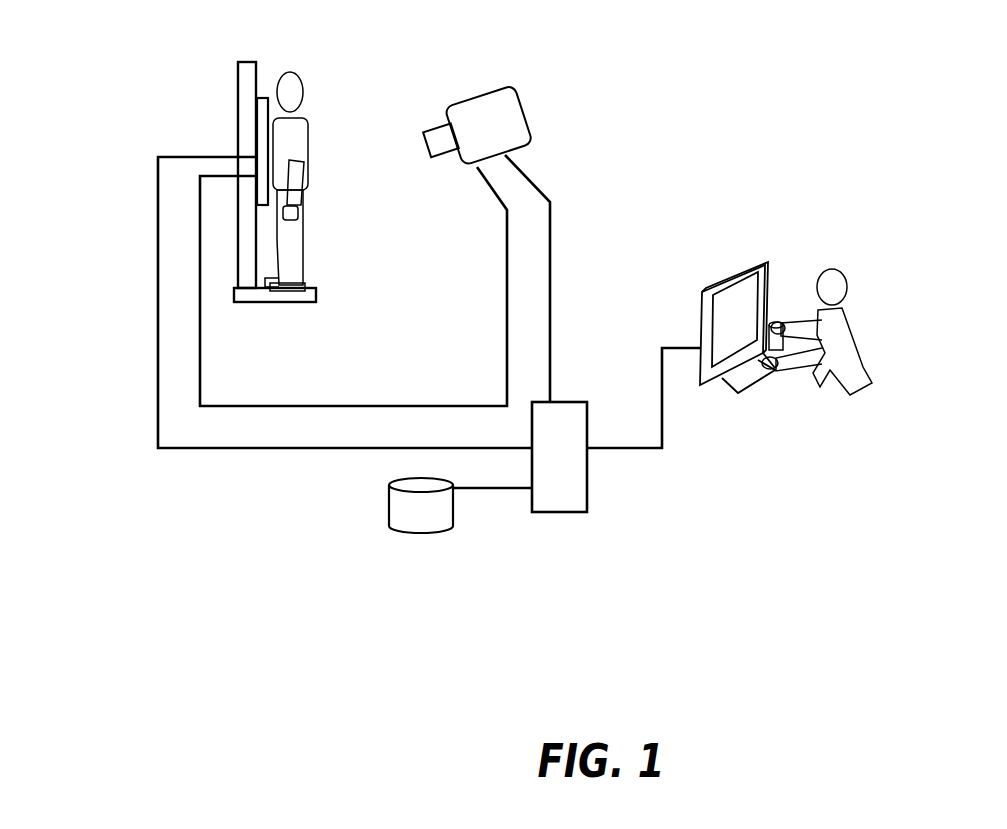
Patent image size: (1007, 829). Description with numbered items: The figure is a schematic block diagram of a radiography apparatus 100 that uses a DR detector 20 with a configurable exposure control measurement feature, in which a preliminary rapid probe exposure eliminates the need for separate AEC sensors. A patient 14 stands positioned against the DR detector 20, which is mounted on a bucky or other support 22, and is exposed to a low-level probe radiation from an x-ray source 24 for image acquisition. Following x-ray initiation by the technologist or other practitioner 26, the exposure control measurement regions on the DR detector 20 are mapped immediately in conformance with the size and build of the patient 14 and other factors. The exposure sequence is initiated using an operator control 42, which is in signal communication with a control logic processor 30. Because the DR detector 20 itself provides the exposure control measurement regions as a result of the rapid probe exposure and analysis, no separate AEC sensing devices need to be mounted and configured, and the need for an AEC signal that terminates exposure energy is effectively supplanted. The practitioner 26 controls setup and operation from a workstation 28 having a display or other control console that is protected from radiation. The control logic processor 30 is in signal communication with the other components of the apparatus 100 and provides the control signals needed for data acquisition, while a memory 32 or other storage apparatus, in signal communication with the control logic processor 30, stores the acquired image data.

The radiography apparatus 100 is at (911, 150).
The patient 14 is at (302, 235).
The DR detector 20 is at (263, 98).
The support 22 is at (237, 120).
The x-ray source 24 is at (476, 136).
The practitioner 26 is at (866, 355).
The workstation 28 is at (732, 275).
The control logic processor 30 is at (546, 468).
The memory 32 is at (440, 521).
The operator control 42 is at (779, 320).